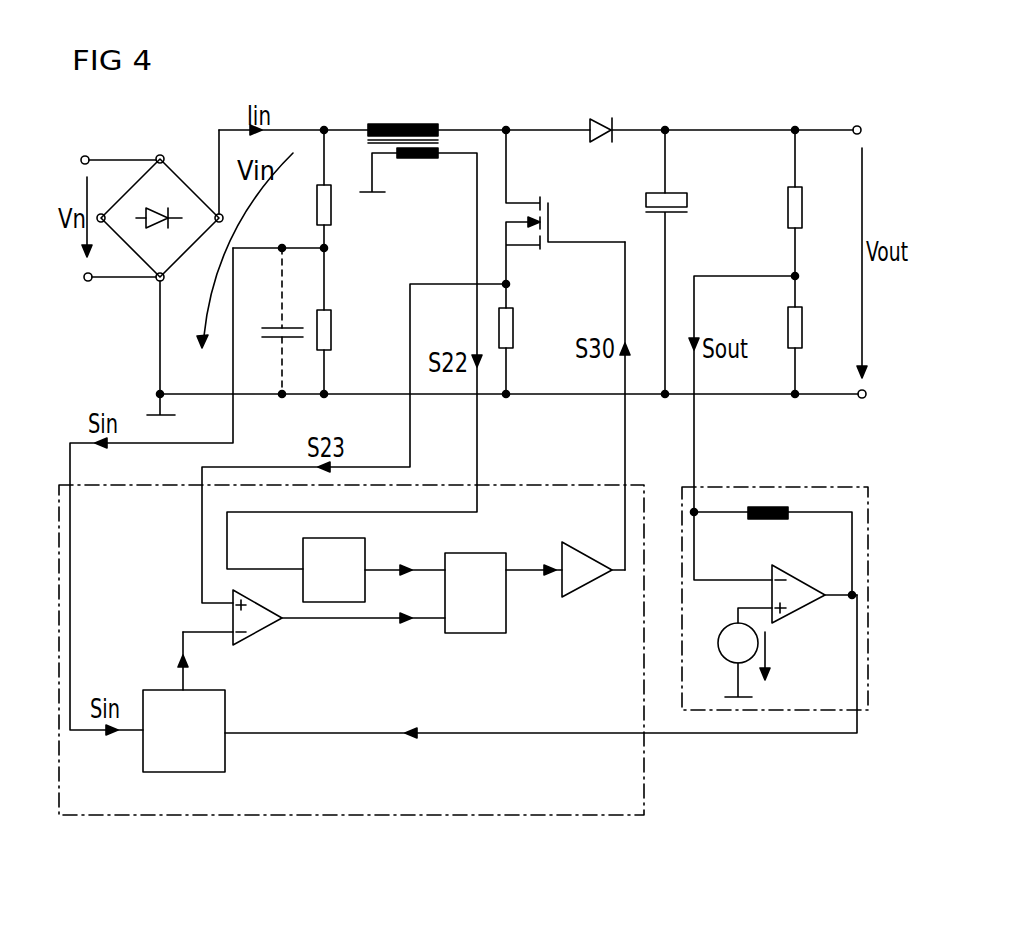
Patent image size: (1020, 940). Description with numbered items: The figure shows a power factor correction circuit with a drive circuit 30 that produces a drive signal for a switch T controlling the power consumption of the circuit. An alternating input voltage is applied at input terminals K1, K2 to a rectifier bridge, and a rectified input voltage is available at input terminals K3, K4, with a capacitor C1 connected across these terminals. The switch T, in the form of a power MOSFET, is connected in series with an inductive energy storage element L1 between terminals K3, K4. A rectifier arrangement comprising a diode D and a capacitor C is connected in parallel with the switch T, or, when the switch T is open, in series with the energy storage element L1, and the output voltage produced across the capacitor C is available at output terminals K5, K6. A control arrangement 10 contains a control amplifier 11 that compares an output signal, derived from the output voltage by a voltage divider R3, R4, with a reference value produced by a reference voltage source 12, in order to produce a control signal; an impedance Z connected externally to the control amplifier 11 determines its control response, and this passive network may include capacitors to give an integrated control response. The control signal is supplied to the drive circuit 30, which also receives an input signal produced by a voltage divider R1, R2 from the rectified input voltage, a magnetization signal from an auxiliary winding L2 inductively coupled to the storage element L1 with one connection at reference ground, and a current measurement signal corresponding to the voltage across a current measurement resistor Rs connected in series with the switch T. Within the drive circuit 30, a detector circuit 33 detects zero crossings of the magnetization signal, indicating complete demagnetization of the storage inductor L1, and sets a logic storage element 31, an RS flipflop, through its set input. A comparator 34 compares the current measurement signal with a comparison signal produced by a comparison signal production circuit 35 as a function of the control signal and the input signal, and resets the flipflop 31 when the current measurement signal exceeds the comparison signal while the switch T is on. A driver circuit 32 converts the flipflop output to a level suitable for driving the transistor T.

The control arrangement 10 is at (768, 487).
The control amplifier 11 is at (796, 571).
The reference voltage source 12 is at (730, 628).
The drive circuit 30 is at (646, 787).
The logic storage element 31 is at (480, 635).
The driver circuit 32 is at (590, 584).
The detector circuit 33 is at (303, 553).
The comparator 34 is at (262, 633).
The comparison signal production circuit 35 is at (226, 752).
The input terminal K1 is at (86, 155).
The input terminal K2 is at (88, 282).
The input terminal K3 is at (215, 213).
The input terminal K4 is at (158, 393).
The output terminal K5 is at (856, 126).
The output terminal K6 is at (858, 391).
The voltage divider resistor R1 is at (331, 208).
The voltage divider resistor R2 is at (332, 316).
The voltage divider resistor R3 is at (788, 212).
The voltage divider resistor R4 is at (788, 328).
The current measurement resistor Rs is at (514, 320).
The capacitor C is at (672, 191).
The capacitor C1 is at (279, 325).
The inductive energy storage element L1 is at (410, 125).
The auxiliary winding L2 is at (410, 158).
The diode D is at (615, 125).
The switch T is at (552, 222).
The impedance Z is at (752, 521).